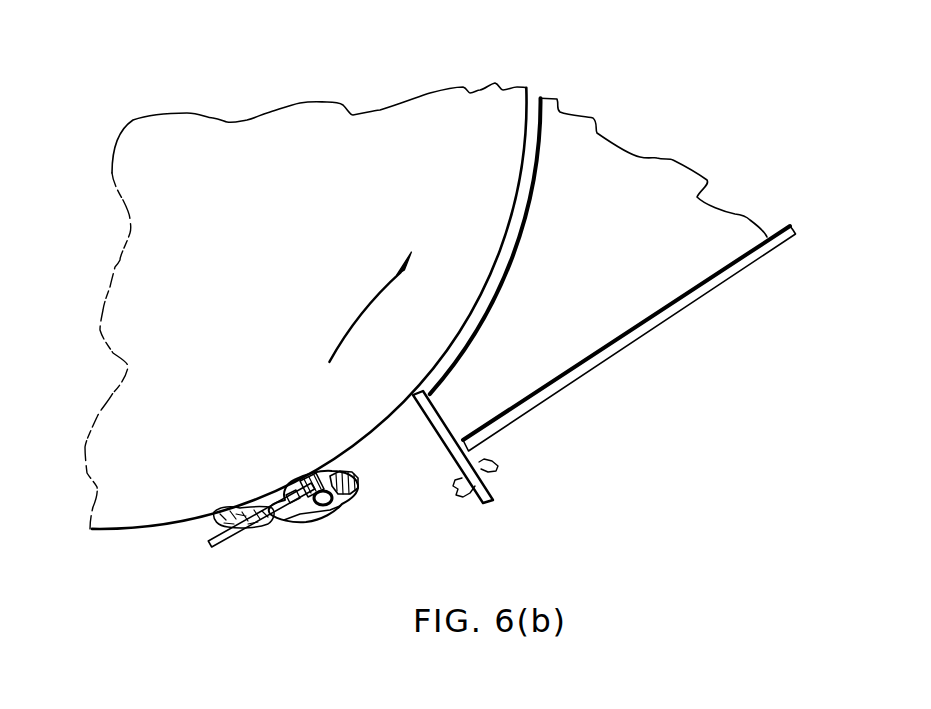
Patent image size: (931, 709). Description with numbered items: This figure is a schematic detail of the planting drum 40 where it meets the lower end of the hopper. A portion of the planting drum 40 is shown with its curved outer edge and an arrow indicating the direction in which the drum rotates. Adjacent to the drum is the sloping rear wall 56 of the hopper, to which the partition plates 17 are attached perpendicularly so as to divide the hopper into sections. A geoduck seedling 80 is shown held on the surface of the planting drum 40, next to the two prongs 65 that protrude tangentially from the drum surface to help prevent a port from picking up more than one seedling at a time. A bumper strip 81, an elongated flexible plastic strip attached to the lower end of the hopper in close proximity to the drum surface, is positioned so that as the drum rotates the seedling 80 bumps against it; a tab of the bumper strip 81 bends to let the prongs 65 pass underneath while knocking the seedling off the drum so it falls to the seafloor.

The planting drum 40 is at (252, 130).
The partition plates 17 is at (668, 172).
The sloping rear wall 56 is at (640, 325).
The prongs 65 is at (218, 545).
The geoduck seedling 80 is at (347, 497).
The bumper strip 81 is at (485, 505).